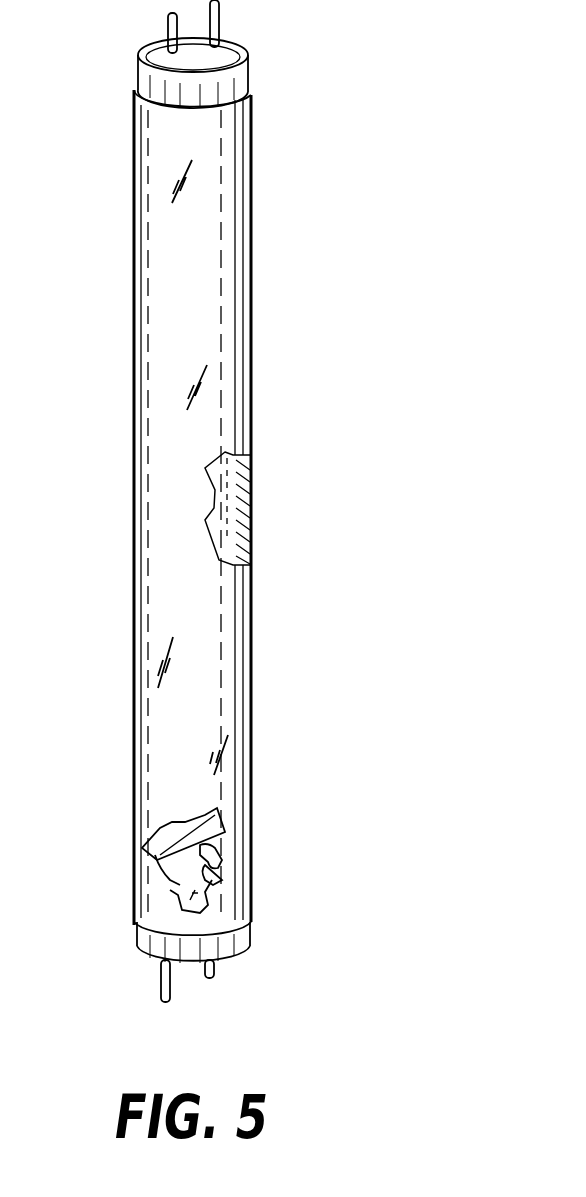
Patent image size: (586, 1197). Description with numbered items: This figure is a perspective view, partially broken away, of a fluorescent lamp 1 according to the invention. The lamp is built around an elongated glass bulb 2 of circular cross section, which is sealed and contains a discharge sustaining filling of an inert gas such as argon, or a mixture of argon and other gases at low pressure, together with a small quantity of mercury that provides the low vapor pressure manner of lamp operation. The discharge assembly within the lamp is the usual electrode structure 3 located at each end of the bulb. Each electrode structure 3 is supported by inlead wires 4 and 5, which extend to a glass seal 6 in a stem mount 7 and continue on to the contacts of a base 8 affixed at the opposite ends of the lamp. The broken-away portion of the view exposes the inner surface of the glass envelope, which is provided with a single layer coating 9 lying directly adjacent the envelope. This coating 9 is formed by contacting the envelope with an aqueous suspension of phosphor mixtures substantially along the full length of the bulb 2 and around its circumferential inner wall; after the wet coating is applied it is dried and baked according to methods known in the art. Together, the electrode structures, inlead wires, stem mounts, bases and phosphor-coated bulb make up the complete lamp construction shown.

The fluorescent lamp 1 is at (312, 212).
The elongated glass bulb 2 is at (253, 345).
The electrode structure 3 is at (173, 840).
The inlead wire 4 is at (220, 848).
The inlead wire 5 is at (170, 875).
The glass seal 6 is at (170, 890).
The stem mount 7 is at (213, 885).
The base 8 is at (250, 67).
The single layer coating 9 is at (255, 525).